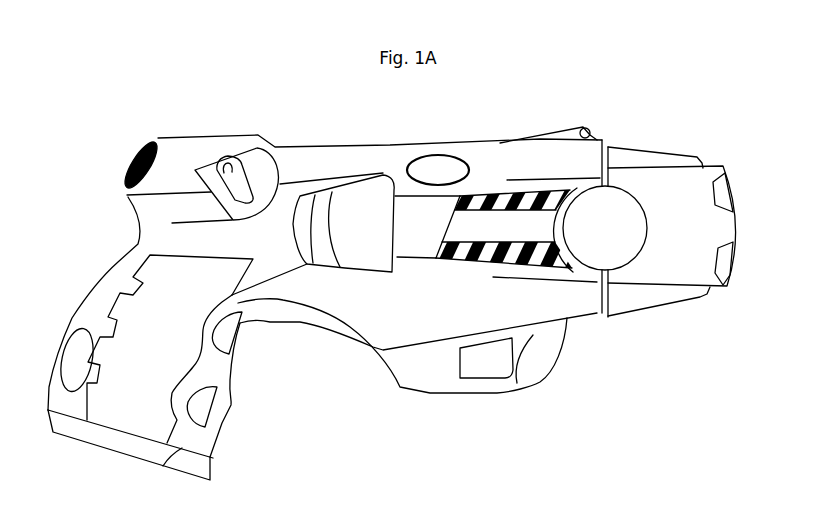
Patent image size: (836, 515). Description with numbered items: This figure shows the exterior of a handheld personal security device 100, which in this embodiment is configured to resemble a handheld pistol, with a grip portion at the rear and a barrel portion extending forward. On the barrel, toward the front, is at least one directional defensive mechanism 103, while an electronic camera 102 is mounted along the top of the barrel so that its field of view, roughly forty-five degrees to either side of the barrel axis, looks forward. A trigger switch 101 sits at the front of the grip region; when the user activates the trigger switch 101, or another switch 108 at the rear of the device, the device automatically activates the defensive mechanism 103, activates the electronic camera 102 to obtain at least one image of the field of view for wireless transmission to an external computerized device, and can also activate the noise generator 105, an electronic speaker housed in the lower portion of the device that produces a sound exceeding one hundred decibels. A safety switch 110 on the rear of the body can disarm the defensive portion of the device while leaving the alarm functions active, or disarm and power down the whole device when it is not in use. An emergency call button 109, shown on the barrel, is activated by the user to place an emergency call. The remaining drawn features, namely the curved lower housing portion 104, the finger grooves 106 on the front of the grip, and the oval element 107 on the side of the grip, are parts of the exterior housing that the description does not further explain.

The handheld personal security device 100 is at (68, 64).
The trigger switch 101 is at (340, 220).
The electronic camera 102 is at (597, 130).
The directional defensive mechanism 103 is at (743, 187).
The lower housing portion 104 is at (547, 362).
The noise generator 105 is at (480, 365).
The finger grooves 106 is at (227, 335).
The grip button 107 is at (68, 355).
The switch 108 is at (118, 173).
The emergency call button 109 is at (468, 167).
The safety switch 110 is at (253, 167).